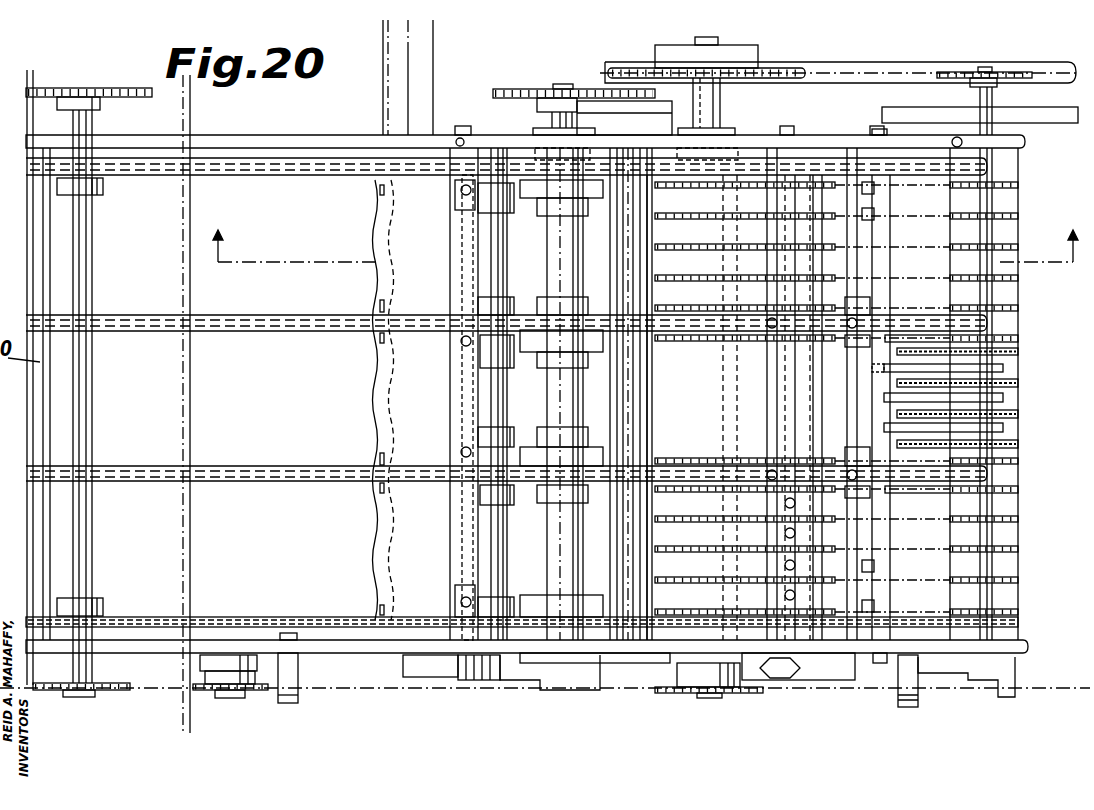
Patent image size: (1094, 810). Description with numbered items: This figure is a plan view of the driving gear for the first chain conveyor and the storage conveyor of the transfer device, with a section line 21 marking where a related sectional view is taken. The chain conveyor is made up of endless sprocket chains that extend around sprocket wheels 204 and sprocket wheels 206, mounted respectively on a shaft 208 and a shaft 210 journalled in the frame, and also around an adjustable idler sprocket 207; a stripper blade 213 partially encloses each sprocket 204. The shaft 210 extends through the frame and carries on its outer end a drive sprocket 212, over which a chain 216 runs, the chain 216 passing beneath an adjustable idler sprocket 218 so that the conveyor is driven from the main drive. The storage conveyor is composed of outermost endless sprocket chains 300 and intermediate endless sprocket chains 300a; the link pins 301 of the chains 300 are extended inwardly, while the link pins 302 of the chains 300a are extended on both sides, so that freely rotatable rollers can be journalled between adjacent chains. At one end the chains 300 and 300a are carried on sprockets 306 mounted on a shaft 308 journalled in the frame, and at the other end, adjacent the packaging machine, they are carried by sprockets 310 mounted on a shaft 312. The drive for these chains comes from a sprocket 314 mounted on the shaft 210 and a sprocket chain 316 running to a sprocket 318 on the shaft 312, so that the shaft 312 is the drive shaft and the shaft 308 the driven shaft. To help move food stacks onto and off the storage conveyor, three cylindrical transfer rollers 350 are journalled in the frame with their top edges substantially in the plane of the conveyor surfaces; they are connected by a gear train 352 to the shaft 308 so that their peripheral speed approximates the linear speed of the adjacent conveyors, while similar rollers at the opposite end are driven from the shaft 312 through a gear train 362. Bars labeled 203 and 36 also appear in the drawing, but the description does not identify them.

The section line 21- 21 is at (645, 259).
The gear train 362 is at (82, 58).
The shaft 312 is at (80, 404).
The sprockets 310 is at (95, 195).
The sprocket 318 is at (120, 690).
The endless sprocket chains 300 is at (308, 175).
The intermediate endless sprocket chains 300a is at (330, 331).
The link pins 302 is at (340, 308).
The link pins 301 is at (372, 200).
The shaft 308 is at (550, 534).
The gear train 352 is at (588, 70).
The cylindrical rollers 350 is at (645, 435).
The drive sprocket 212 is at (648, 50).
The chain 216 is at (897, 72).
The shaft 210 is at (720, 27).
The adjustable idler sprocket 218 is at (1038, 47).
The sprocket wheels 206 is at (745, 338).
The adjustable idler sprocket 207 is at (835, 232).
The sprocket wheels 204 is at (1013, 240).
The rack bar 203 is at (1018, 337).
The comb plate 36 is at (1017, 381).
The stripper blade 213 is at (1005, 436).
The shaft 208 is at (983, 533).
The sprocket chain 316 is at (390, 688).
The sprockets 306 is at (553, 625).
The sprocket 314 is at (738, 692).